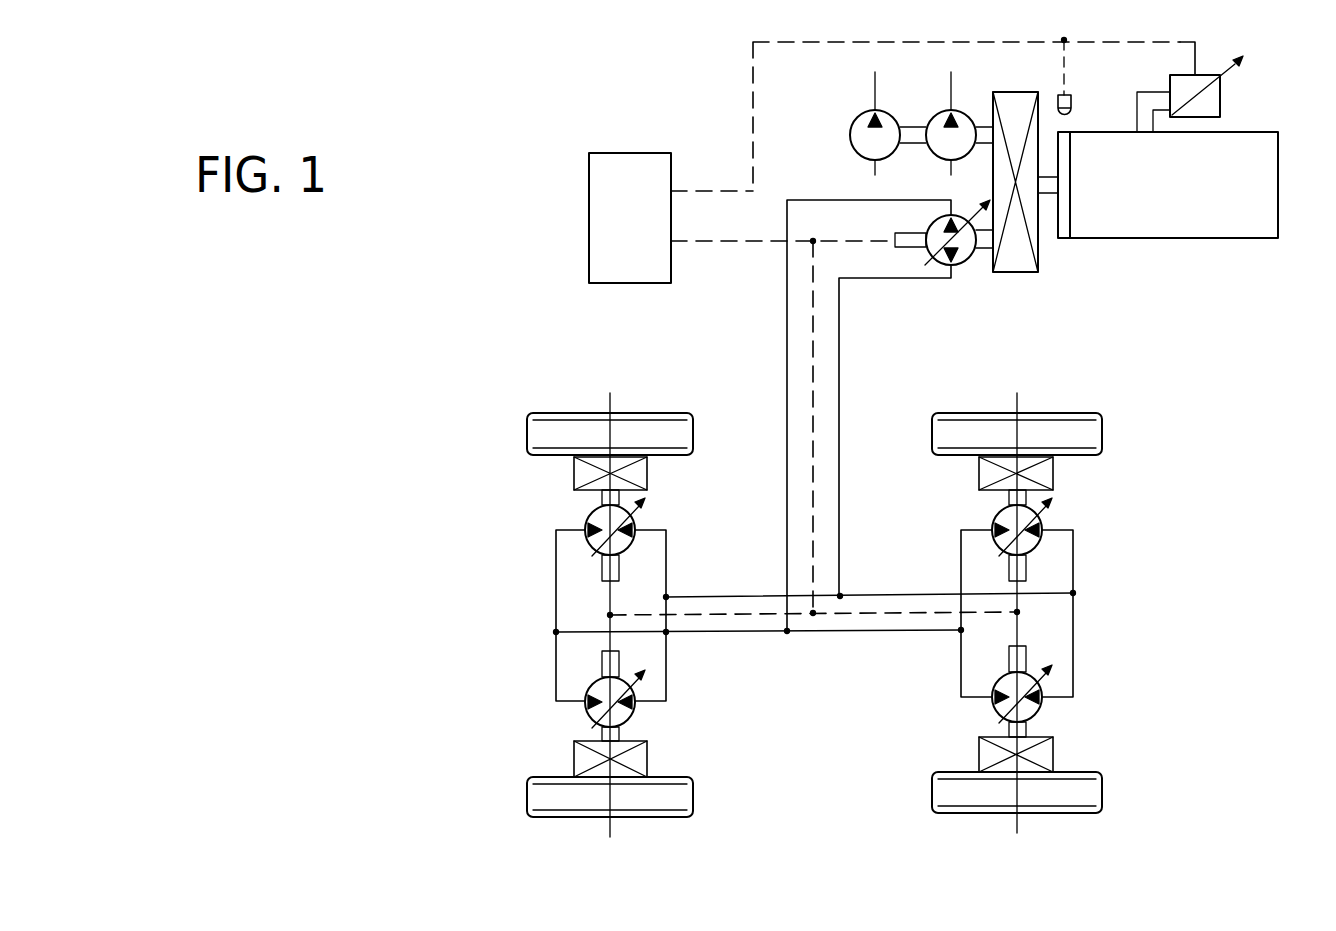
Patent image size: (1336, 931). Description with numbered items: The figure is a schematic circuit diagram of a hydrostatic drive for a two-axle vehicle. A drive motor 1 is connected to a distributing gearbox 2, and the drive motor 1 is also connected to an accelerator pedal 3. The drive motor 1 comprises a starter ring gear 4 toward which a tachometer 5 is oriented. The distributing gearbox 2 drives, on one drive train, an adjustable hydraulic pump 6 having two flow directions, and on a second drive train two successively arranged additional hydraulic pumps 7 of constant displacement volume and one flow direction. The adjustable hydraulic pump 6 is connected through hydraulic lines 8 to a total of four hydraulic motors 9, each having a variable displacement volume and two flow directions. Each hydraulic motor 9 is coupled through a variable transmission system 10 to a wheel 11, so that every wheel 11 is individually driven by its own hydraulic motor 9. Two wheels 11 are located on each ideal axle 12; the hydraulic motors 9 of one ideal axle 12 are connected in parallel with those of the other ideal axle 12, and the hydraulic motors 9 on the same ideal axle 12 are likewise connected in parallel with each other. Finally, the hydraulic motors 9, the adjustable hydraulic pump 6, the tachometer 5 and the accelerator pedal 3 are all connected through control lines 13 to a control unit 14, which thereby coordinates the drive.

The drive motor 1 is at (1265, 183).
The distributing gearbox 2 is at (1016, 262).
The accelerator pedal 3 is at (1210, 102).
The starter ring gear 4 is at (1072, 148).
The tachometer 5 is at (1072, 98).
The adjustable hydraulic pump 6 is at (968, 258).
The hydraulic pumps 7 is at (946, 113).
The hydraulic lines 8 is at (830, 309).
The hydraulic motors 9 is at (593, 518).
The variable transmission system 10 is at (577, 468).
The wheel 11 is at (540, 436).
The ideal axle 12 is at (622, 830).
The control lines 13 is at (763, 228).
The control unit 14 is at (608, 218).